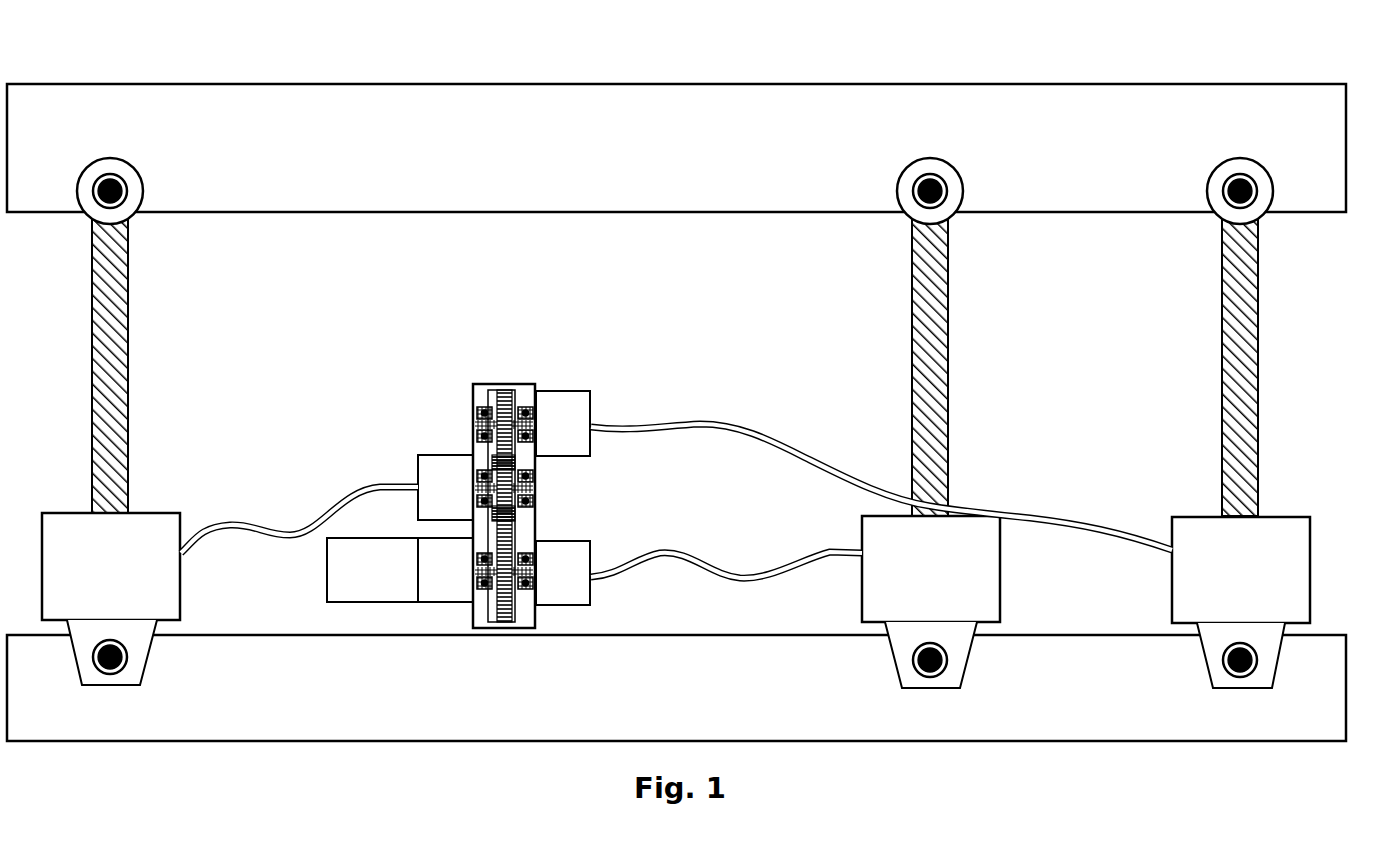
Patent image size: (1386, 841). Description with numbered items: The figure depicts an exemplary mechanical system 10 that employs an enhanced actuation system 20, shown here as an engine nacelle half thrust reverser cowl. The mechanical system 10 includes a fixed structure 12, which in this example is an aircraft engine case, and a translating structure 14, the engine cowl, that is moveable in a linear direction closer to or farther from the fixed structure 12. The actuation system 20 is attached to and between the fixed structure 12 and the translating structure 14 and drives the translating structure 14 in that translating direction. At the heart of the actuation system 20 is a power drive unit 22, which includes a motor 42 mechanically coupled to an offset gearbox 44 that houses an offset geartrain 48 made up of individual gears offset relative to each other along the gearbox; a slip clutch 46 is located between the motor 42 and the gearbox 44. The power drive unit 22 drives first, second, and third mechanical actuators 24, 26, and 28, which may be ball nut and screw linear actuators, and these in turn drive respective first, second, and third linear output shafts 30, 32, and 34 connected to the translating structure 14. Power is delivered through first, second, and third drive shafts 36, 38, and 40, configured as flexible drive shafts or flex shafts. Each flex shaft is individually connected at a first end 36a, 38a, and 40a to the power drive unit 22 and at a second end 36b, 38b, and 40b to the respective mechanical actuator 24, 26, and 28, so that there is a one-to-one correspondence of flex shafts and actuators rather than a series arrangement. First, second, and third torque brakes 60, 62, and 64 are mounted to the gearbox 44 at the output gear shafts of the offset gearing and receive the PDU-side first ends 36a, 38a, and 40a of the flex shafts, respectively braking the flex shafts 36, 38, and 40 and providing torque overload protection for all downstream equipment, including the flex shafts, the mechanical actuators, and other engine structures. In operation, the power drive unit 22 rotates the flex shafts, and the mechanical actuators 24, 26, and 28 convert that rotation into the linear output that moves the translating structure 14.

The mechanical system 10 is at (358, 70).
The fixed structure 12 is at (676, 688).
The translating structure 14 is at (676, 148).
The actuation system 20 is at (662, 332).
The power drive unit 22 is at (492, 362).
The first mechanical actuator 24 is at (977, 516).
The second mechanical actuator 26 is at (157, 513).
The third mechanical actuator 28 is at (1283, 520).
The first linear output shaft 30 is at (948, 300).
The second linear output shaft 32 is at (128, 300).
The third linear output shaft 34 is at (1258, 281).
The first drive shaft 36 is at (663, 560).
The first end of first flex shaft 36a is at (598, 550).
The second end of first flex shaft 36b is at (856, 548).
The second drive shaft 38 is at (285, 527).
The first end of second flex shaft 38a is at (408, 484).
The second end of second flex shaft 38b is at (183, 558).
The third drive shaft 40 is at (764, 437).
The first end of third flex shaft 40a is at (597, 420).
The second end of third flex shaft 40b is at (1166, 558).
The motor 42 is at (367, 603).
The offset gearbox 44 is at (472, 388).
The slip clutch 46 is at (440, 603).
The offset geartrain 48 is at (505, 520).
The first torque brake 60 is at (592, 590).
The second torque brake 62 is at (440, 454).
The third torque brake 64 is at (565, 390).